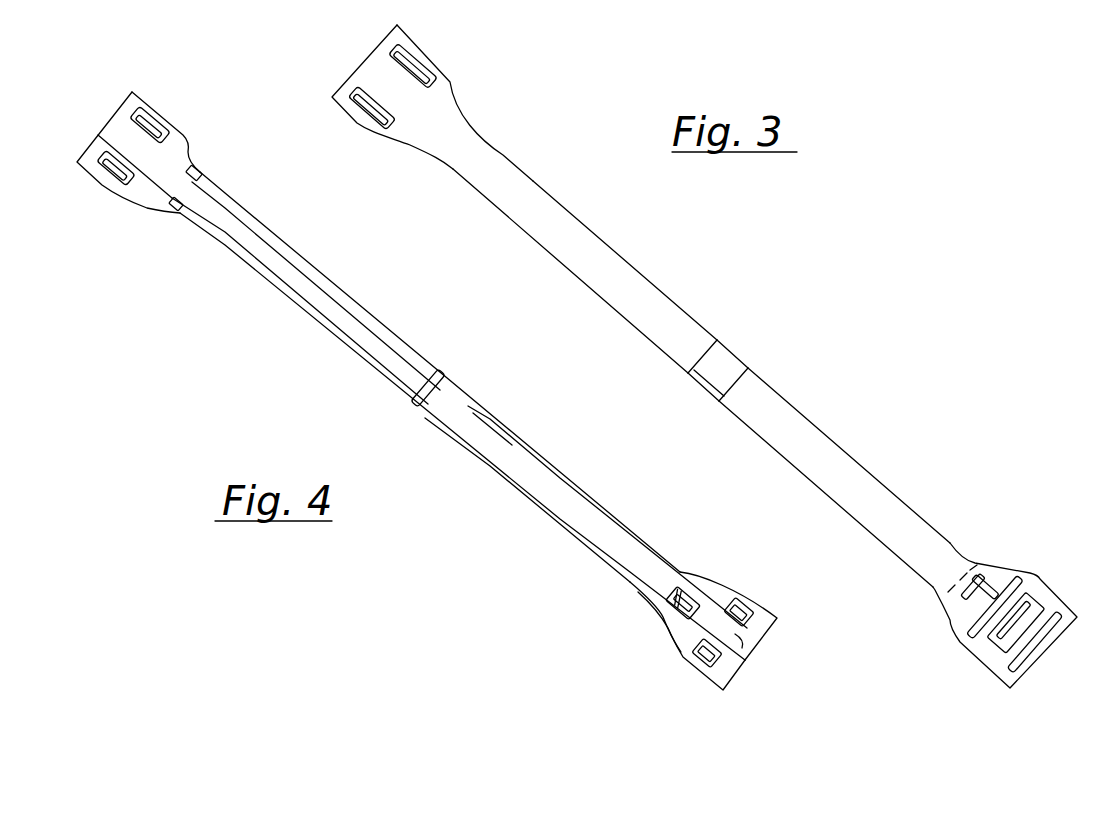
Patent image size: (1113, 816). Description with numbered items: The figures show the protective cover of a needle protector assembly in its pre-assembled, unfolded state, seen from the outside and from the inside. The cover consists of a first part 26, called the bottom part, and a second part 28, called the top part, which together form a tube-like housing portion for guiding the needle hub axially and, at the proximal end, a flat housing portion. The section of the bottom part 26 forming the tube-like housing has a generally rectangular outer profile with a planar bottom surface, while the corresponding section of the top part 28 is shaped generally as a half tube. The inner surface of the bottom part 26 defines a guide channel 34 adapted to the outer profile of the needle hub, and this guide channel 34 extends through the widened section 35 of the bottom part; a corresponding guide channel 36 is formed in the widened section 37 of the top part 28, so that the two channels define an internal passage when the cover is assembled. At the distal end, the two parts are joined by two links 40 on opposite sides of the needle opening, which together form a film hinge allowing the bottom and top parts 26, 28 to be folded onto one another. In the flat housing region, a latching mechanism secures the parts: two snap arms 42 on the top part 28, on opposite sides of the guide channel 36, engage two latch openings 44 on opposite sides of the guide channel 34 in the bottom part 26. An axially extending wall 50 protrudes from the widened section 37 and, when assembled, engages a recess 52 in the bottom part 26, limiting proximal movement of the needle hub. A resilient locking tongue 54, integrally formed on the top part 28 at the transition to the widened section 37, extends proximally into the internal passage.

In FIG. 3, the first part 26 is at (563, 268).
In FIG. 4, the first part 26 is at (300, 320).
In FIG. 3, the second part 28 is at (850, 456).
In FIG. 4, the second part 28 is at (533, 520).
In FIG. 4, the guide channel 34 is at (300, 277).
In FIG. 3, the widened section 35 is at (345, 117).
In FIG. 4, the widened section 35 is at (97, 178).
In FIG. 4, the guide channel 36 is at (730, 682).
In FIG. 3, the widened section 37 is at (1053, 597).
In FIG. 4, the widened section 37 is at (775, 614).
In FIG. 3, the links 40 is at (713, 340).
In FIG. 4, the links 40 is at (437, 376).
In FIG. 4, the snap arms 42 is at (740, 602).
In FIG. 3, the latch openings 44 is at (423, 74).
In FIG. 4, the latch openings 44 is at (153, 130).
In FIG. 4, the wall 50 is at (742, 640).
In FIG. 4, the recess 52 is at (183, 173).
In FIG. 3, the locking tongue 54 is at (985, 592).
In FIG. 4, the locking tongue 54 is at (692, 603).